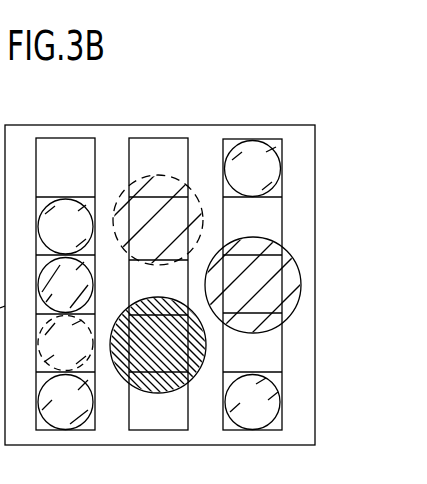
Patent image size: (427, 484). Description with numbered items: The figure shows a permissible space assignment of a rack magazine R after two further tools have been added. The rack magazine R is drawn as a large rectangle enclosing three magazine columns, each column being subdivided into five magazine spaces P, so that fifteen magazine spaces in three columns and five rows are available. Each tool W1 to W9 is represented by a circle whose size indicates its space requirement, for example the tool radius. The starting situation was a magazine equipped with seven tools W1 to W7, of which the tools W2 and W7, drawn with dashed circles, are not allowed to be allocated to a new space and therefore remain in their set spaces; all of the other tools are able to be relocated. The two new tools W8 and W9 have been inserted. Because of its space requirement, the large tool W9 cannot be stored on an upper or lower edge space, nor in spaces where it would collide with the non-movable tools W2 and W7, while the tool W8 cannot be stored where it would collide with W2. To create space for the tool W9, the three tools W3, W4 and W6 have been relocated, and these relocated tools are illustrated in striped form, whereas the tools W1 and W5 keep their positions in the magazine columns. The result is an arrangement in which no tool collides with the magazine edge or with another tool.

The rack magazine R is at (161, 125).
The magazine space P is at (270, 139).
The tool W1 is at (65, 226).
The tool W2 is at (165, 230).
The tool W3 is at (65, 402).
The tool W4 is at (252, 402).
The tool W5 is at (253, 169).
The tool W6 is at (257, 287).
The tool W7 is at (65, 343).
The tool W8 is at (65, 285).
The tool W9 is at (166, 346).